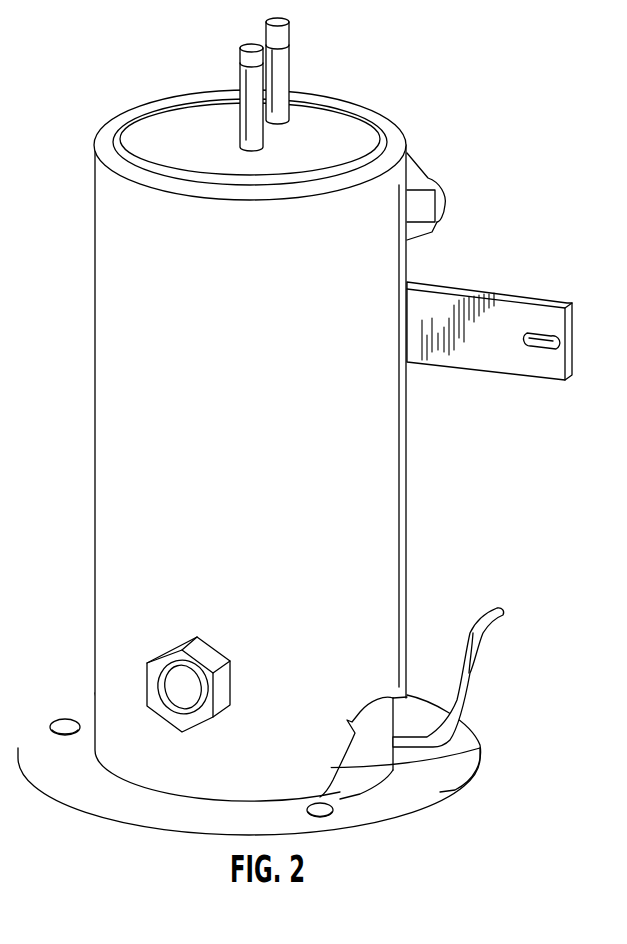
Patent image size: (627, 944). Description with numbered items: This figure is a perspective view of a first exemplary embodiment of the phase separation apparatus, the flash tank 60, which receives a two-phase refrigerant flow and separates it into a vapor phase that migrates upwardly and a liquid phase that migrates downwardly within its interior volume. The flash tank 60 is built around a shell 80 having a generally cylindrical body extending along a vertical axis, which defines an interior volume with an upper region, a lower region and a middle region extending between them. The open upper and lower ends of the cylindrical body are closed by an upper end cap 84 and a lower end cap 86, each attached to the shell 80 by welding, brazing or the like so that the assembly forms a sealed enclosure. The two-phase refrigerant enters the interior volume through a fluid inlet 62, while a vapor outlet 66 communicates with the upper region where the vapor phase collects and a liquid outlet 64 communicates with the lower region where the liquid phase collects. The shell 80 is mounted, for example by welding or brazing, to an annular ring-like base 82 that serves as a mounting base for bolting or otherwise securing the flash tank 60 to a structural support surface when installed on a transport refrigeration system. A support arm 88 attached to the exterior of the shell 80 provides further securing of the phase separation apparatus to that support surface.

The flash tank 60 is at (461, 471).
The fluid inlet 62 is at (241, 62).
The liquid outlet 64 is at (480, 732).
The vapor outlet 66 is at (284, 57).
The shell 80 is at (407, 410).
The annular ring-like base 82 is at (433, 778).
The upper end cap 84 is at (330, 128).
The lower end cap 86 is at (367, 770).
The support arm 88 is at (500, 293).